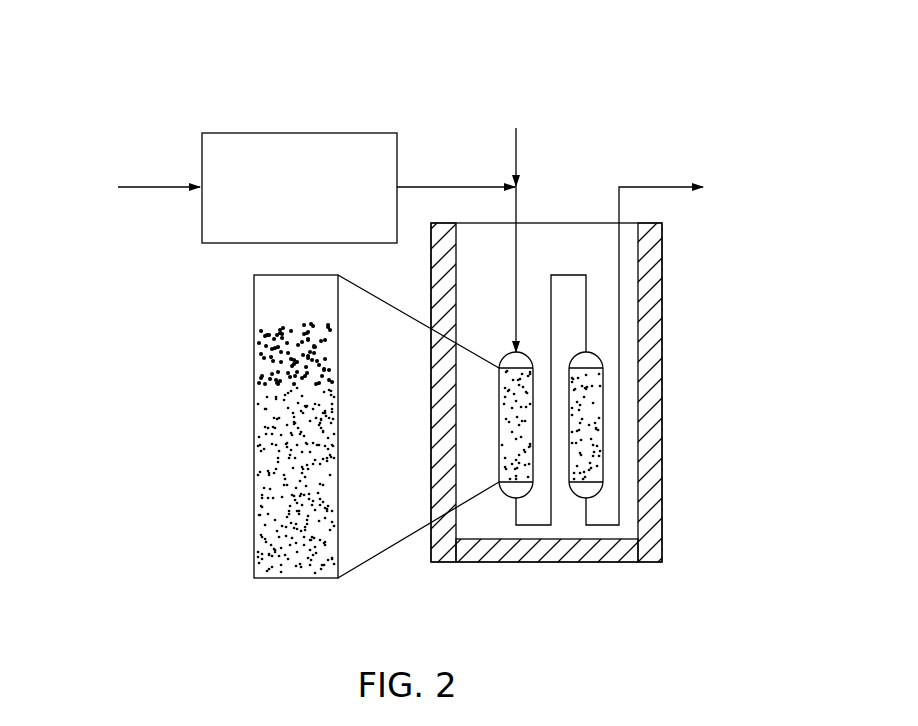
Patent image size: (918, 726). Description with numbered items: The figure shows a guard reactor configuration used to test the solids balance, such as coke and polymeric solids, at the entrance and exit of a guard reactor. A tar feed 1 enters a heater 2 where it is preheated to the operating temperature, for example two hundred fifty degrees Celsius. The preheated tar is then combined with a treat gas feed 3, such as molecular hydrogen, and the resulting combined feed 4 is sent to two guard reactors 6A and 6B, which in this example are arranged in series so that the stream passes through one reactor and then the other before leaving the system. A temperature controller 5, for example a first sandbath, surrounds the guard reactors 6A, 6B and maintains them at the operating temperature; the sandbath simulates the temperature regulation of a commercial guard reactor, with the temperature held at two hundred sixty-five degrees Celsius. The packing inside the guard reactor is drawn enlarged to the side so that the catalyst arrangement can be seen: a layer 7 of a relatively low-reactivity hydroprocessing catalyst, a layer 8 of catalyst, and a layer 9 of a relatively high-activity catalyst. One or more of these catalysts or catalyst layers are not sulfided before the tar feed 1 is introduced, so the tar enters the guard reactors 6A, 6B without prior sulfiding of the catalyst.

The tar feed 1 is at (133, 188).
The preheater 2 is at (297, 133).
The hydrogen feed 3 is at (517, 145).
The combined feed 4 is at (518, 258).
The temperature controller 5 is at (628, 562).
The guard reactor 6A is at (507, 495).
The guard reactor 6B is at (597, 355).
The layer of relatively low-reactivity hydroprocessing catalyst 7 is at (254, 292).
The layer of catalyst 8 is at (254, 355).
The layer of relatively high-activity catalyst 9 is at (254, 480).